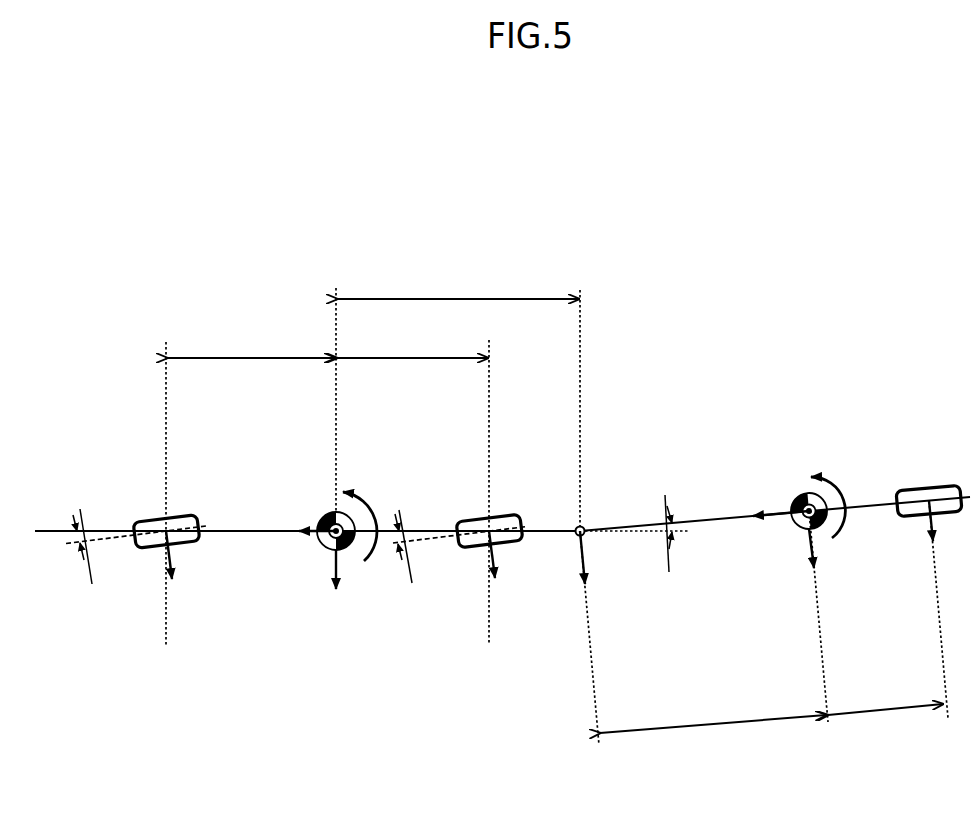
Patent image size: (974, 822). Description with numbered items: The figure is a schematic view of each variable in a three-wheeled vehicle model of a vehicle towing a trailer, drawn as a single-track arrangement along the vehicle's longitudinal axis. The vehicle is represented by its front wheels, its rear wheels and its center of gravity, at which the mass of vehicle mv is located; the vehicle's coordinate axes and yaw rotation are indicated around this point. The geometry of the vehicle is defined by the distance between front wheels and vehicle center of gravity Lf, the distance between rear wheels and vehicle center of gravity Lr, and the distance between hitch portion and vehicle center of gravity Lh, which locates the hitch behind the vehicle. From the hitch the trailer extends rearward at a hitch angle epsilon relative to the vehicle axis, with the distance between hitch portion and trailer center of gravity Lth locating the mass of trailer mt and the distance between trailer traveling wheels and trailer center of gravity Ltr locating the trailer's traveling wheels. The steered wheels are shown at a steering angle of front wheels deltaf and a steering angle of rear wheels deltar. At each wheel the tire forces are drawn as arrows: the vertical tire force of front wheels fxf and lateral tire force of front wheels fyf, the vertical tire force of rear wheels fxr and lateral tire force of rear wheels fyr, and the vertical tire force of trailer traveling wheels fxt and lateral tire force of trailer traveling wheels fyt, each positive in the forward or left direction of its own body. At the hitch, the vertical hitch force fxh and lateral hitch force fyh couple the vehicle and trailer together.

The distance between front wheels and vehicle center of gravity Lf is at (251, 338).
The distance between rear wheels and vehicle center of gravity Lr is at (412, 339).
The distance between hitch portion and vehicle center of gravity Lh is at (458, 281).
The distance between hitch portion and trailer center of gravity Lth is at (713, 709).
The distance between trailer traveling wheels and trailer center of gravity Ltr is at (885, 695).
The vertical tire force of front wheels fxf is at (166, 531).
The lateral tire force of front wheels fyf is at (184, 559).
The steering angle of front wheels deltaf is at (76, 550).
The vertical tire force of rear wheels fxr is at (489, 531).
The lateral tire force of rear wheels fyr is at (507, 560).
The steering angle of rear wheels deltar is at (394, 551).
The vertical hitch force fxh is at (580, 531).
The lateral hitch force fyh is at (599, 564).
The mass of vehicle mv is at (323, 546).
The mass of trailer mt is at (795, 498).
The vertical tire force of trailer traveling wheels fxt is at (929, 501).
The lateral tire force of trailer traveling wheels fyt is at (944, 526).
The hitch angle epsilon is at (675, 533).